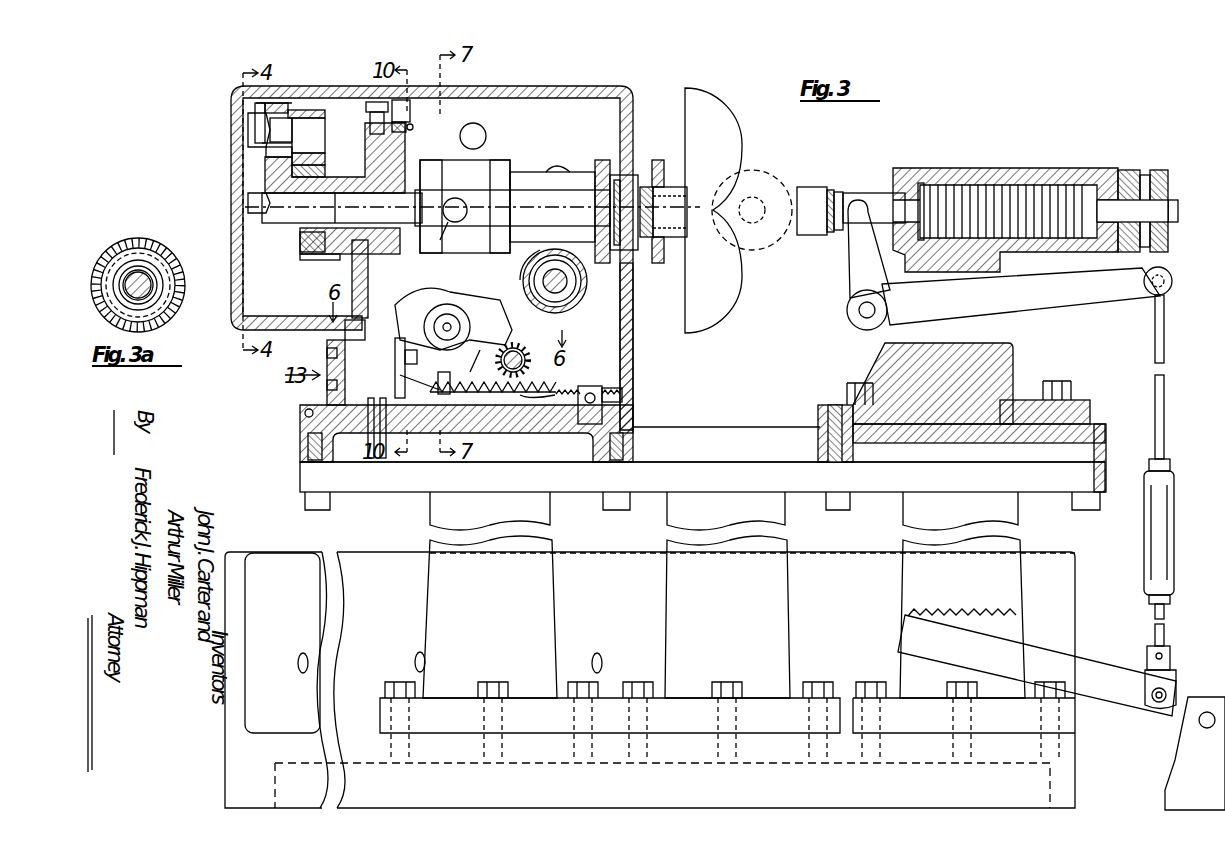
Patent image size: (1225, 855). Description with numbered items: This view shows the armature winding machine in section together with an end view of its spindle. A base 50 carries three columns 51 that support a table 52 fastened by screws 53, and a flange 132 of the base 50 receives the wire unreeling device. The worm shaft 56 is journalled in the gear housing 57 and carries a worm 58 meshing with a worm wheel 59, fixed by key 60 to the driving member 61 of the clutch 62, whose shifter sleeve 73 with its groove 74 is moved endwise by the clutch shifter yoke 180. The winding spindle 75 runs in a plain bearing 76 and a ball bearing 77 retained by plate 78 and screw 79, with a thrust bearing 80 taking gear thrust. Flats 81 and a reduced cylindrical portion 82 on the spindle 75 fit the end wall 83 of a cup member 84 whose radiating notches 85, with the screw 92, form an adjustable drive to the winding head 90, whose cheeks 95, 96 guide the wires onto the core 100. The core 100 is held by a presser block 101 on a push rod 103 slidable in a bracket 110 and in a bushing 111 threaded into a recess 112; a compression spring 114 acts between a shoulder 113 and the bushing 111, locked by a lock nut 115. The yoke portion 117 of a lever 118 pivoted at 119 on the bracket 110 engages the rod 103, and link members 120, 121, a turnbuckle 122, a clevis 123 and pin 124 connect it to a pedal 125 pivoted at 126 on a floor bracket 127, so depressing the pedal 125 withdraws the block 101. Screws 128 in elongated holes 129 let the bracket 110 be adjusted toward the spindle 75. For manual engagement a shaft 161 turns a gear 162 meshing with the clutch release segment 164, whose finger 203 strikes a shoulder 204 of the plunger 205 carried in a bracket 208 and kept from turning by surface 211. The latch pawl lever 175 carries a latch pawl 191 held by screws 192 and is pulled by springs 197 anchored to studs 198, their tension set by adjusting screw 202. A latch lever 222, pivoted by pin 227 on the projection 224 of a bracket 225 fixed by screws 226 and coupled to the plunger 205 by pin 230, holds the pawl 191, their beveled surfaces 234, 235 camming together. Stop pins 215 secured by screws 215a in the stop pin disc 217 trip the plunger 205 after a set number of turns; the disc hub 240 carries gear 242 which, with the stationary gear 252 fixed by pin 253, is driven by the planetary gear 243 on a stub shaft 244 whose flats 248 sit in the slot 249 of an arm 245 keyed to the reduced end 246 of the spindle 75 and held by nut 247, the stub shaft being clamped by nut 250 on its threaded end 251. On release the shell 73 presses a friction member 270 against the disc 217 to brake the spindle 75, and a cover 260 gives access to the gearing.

In FIG. 3, the base 50 is at (1062, 773).
In FIG. 3, the columns 51 is at (538, 596).
In FIG. 3, the table 52 is at (712, 437).
In FIG. 3, the screws 53 is at (320, 505).
In FIG. 3, the worm shaft 56 is at (565, 292).
In FIG. 3, the gear housing 57 is at (360, 250).
In FIG. 3, the worm 58 is at (548, 284).
In FIG. 3, the worm wheel 59 is at (560, 168).
In FIG. 3, the key 60 is at (568, 192).
In FIG. 3, the driving member 61 is at (521, 172).
In FIG. 3, the clutch 62 is at (473, 136).
In FIG. 3, the shifter sleeve 73 is at (498, 160).
In FIG. 3, the groove 74 is at (436, 160).
In FIG. 3, the winding spindle 75 is at (335, 218).
In FIG. 3a, the winding spindle 75 is at (148, 270).
In FIG. 3, the plain bearing 76 is at (350, 223).
In FIG. 3, the ball bearing 77 is at (655, 238).
In FIG. 3, the plate 78 is at (660, 174).
In FIG. 3, the screw 79 is at (612, 182).
In FIG. 3, the thrust bearing 80 is at (644, 240).
In FIG. 3a, the flats 81 is at (134, 266).
In FIG. 3a, the reduced cylindrical portion 82 is at (114, 274).
In FIG. 3a, the end wall 83 is at (108, 302).
In FIG. 3a, the cup member 84 is at (112, 250).
In FIG. 3a, the radiating notches 85 is at (106, 285).
In FIG. 3, the winding head 90 is at (728, 105).
In FIG. 3a, the screw 92 is at (144, 280).
In FIG. 3, the cheek 95 is at (742, 128).
In FIG. 3, the cheek 96 is at (732, 292).
In FIG. 3, the core 100 is at (760, 175).
In FIG. 3, the presser block 101 is at (814, 186).
In FIG. 3, the push rod 103 is at (876, 193).
In FIG. 3, the bracket 110 is at (1000, 324).
In FIG. 3, the bushing 111 is at (1160, 170).
In FIG. 3, the cylindrical recess 112 is at (1010, 185).
In FIG. 3, the shoulder 113 is at (921, 183).
In FIG. 3, the compression spring 114 is at (972, 185).
In FIG. 3, the lock nut 115 is at (1130, 170).
In FIG. 3, the yoke portion 117 is at (850, 232).
In FIG. 3, the lever 118 is at (1084, 292).
In FIG. 3, the pivot 119 is at (860, 316).
In FIG. 3, the link member 120 is at (1165, 398).
In FIG. 3, the link member 121 is at (1165, 634).
In FIG. 3, the turnbuckle 122 is at (1162, 528).
In FIG. 3, the clevis 123 is at (1150, 690).
In FIG. 3, the pin 124 is at (1156, 703).
In FIG. 3, the pedal 125 is at (1070, 660).
In FIG. 3, the pivot 126 is at (1206, 712).
In FIG. 3, the bracket 127 is at (1190, 772).
In FIG. 3, the screws 128 is at (1072, 392).
In FIG. 3, the elongated holes 129 is at (1027, 400).
In FIG. 3, the flange 132 is at (262, 562).
In FIG. 3, the shaft 161 is at (524, 366).
In FIG. 3, the gear 162 is at (525, 354).
In FIG. 3, the manual clutch release segment 164 is at (470, 327).
In FIG. 3, the latch pawl lever 175 is at (413, 364).
In FIG. 3, the clutch shifter yoke 180 is at (460, 292).
In FIG. 3, the latch pawl 191 is at (450, 388).
In FIG. 3, the screws 192 is at (470, 372).
In FIG. 3, the springs 197 is at (500, 392).
In FIG. 3, the studs 198 is at (592, 424).
In FIG. 3, the adjusting screw 202 is at (604, 386).
In FIG. 3, the finger 203 is at (458, 222).
In FIG. 3, the shoulder 204 is at (448, 222).
In FIG. 3, the plunger 205 is at (345, 325).
In FIG. 3, the bracket 208 is at (407, 358).
In FIG. 3, the surface 211 is at (336, 348).
In FIG. 3, the stop pins 215 is at (398, 124).
In FIG. 3, the screws 215a is at (410, 114).
In FIG. 3, the stop pin disc 217 is at (373, 116).
In FIG. 3, the latch lever 222 is at (383, 430).
In FIG. 3, the projection 224 is at (318, 430).
In FIG. 3, the bracket 225 is at (328, 386).
In FIG. 3, the screws 226 is at (328, 352).
In FIG. 3, the pin 227 is at (305, 414).
In FIG. 3, the pin 230 is at (370, 430).
In FIG. 3, the beveled surface 234 is at (535, 410).
In FIG. 3, the beveled surface 235 is at (430, 400).
In FIG. 3, the hub 240 is at (350, 180).
In FIG. 3, the gear 242 is at (312, 252).
In FIG. 3, the planetary gear 243 is at (298, 110).
In FIG. 3, the stub shaft 244 is at (318, 126).
In FIG. 3, the arm 245 is at (248, 126).
In FIG. 3, the reduced end 246 is at (272, 138).
In FIG. 3, the nut 247 is at (250, 203).
In FIG. 3, the flats 248 is at (278, 147).
In FIG. 3, the slot 249 is at (256, 106).
In FIG. 3, the nut 250 is at (268, 143).
In FIG. 3, the threaded reduced end 251 is at (258, 108).
In FIG. 3, the stationary gear 252 is at (320, 260).
In FIG. 3, the pin 253 is at (322, 150).
In FIG. 3, the cover 260 is at (604, 95).
In FIG. 3, the friction member 270 is at (430, 174).